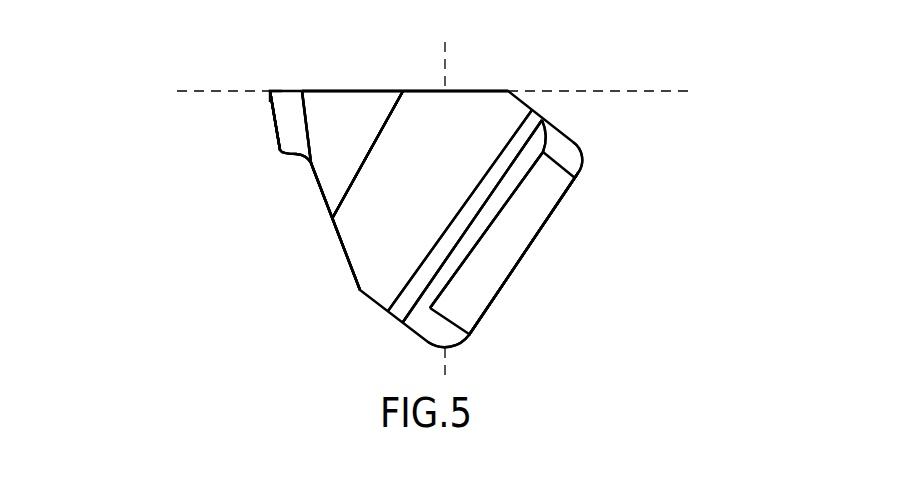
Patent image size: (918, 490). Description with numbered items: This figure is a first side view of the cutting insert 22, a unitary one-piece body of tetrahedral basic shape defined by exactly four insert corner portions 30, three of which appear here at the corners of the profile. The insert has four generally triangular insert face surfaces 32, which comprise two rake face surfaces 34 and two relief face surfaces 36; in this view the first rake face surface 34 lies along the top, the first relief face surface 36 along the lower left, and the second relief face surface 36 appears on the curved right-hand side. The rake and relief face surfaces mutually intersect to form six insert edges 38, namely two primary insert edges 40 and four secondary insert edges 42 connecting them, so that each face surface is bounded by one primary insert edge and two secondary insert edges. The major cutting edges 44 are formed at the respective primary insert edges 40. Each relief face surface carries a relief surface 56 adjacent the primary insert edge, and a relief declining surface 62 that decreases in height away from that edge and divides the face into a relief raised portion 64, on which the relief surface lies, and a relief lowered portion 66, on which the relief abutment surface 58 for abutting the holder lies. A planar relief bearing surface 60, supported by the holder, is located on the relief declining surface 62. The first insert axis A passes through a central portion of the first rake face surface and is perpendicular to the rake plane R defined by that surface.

The cutting insert 22 is at (585, 80).
The insert corner portion 30 is at (269, 88).
The insert face surface 32 is at (465, 90).
The rake face surface 34 is at (460, 114).
The relief face surface 36 is at (509, 234).
The insert edge 38 is at (390, 90).
The primary insert edge 40 is at (407, 213).
The secondary insert edge 42 is at (320, 174).
The major cutting edge 44 is at (447, 213).
The relief surface 56 is at (268, 128).
The relief abutment surface 58 is at (460, 143).
The relief bearing surface 60 is at (287, 158).
The relief declining surface 62 is at (399, 246).
The relief raised portion 64 is at (263, 106).
The relief lowered portion 66 is at (322, 207).
The first insert axis A is at (444, 196).
The rake plane R is at (665, 91).